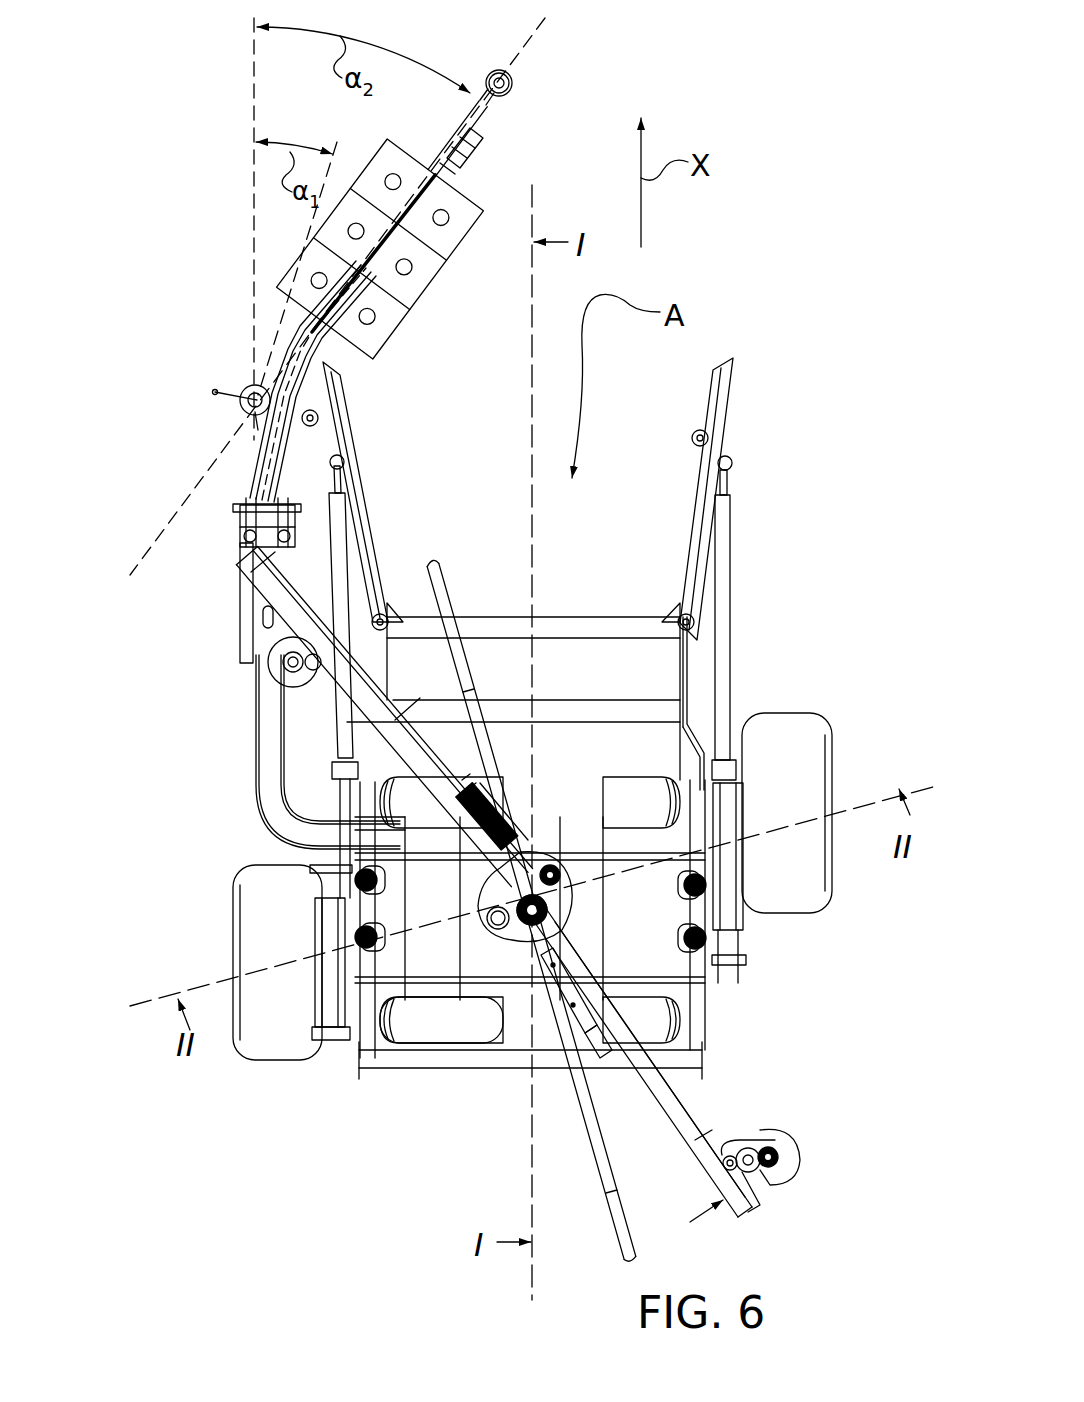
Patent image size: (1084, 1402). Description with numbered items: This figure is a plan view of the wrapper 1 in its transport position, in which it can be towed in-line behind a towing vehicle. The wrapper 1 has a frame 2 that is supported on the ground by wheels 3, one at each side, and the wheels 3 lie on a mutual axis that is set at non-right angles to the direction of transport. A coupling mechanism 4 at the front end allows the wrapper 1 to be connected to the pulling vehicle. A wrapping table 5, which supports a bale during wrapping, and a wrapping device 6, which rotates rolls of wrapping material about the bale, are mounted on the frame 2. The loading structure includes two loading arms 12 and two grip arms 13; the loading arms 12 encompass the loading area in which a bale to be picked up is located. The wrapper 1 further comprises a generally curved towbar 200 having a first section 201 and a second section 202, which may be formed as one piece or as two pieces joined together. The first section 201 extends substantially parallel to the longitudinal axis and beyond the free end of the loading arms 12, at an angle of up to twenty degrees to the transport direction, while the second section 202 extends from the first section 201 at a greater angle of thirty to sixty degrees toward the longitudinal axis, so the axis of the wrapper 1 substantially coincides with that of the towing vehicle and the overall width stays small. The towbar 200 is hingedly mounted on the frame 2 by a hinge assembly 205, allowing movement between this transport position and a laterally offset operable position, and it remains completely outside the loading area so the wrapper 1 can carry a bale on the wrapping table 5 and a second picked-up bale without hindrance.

The wrapper 1 is at (749, 280).
The frame 2 is at (266, 761).
The wheels 3 is at (275, 1032).
The coupling mechanism 4 is at (510, 85).
The wrapping table 5 is at (418, 1028).
The wrapping device 6 is at (517, 930).
The loading arms 12 is at (357, 522).
The grip arms 13 is at (333, 403).
The towbar 200 is at (276, 343).
The first section 201 is at (273, 447).
The second section 202 is at (470, 172).
The hinge assembly 205 is at (232, 522).